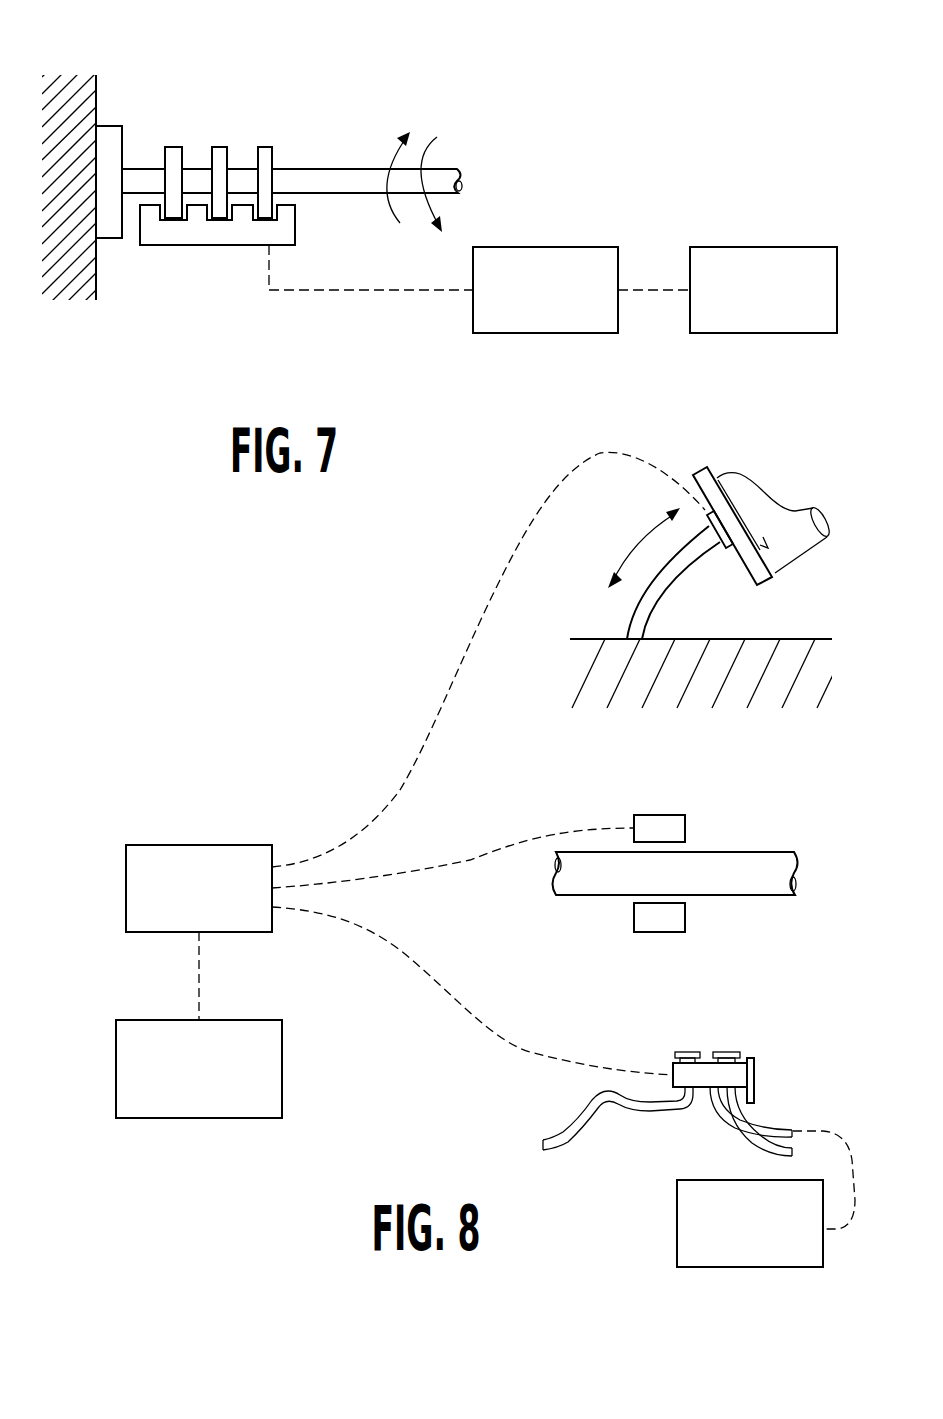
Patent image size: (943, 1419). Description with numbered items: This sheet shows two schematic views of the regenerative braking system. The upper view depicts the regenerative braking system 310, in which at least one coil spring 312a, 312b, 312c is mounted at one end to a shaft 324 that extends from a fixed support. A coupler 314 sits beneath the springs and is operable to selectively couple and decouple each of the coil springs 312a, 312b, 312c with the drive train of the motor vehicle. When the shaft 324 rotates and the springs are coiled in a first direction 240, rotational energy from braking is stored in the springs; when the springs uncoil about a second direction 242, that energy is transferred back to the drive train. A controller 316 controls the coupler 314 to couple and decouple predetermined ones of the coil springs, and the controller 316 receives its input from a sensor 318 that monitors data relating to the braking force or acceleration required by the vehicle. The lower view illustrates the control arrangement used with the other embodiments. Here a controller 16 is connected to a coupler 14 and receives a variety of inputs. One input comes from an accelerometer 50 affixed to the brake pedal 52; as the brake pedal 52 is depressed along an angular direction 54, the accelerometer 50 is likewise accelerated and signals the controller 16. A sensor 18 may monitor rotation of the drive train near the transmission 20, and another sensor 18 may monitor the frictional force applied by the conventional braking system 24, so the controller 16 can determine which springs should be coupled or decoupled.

In FIG. 7, the regenerative braking system 310 is at (632, 72).
In FIG. 7, the shaft 324 is at (150, 178).
In FIG. 7, the coil spring 312a is at (173, 147).
In FIG. 7, the coil spring 312b is at (218, 147).
In FIG. 7, the coil spring 312c is at (261, 147).
In FIG. 7, the coupler 314 is at (203, 233).
In FIG. 7, the controller 316 is at (492, 333).
In FIG. 7, the sensor 318 is at (715, 333).
In FIG. 7, the first direction 240 is at (400, 223).
In FIG. 7, the second direction 242 is at (437, 137).
In FIG. 8, the coupler 14 is at (116, 1038).
In FIG. 8, the controller 16 is at (126, 862).
In FIG. 8, the sensor 18 is at (657, 815).
In FIG. 8, the transmission 20 is at (752, 862).
In FIG. 8, the conventional braking system 24 is at (710, 1072).
In FIG. 8, the accelerometer 50 is at (721, 548).
In FIG. 8, the brake pedal 52 is at (703, 470).
In FIG. 8, the angular direction 54 is at (640, 545).